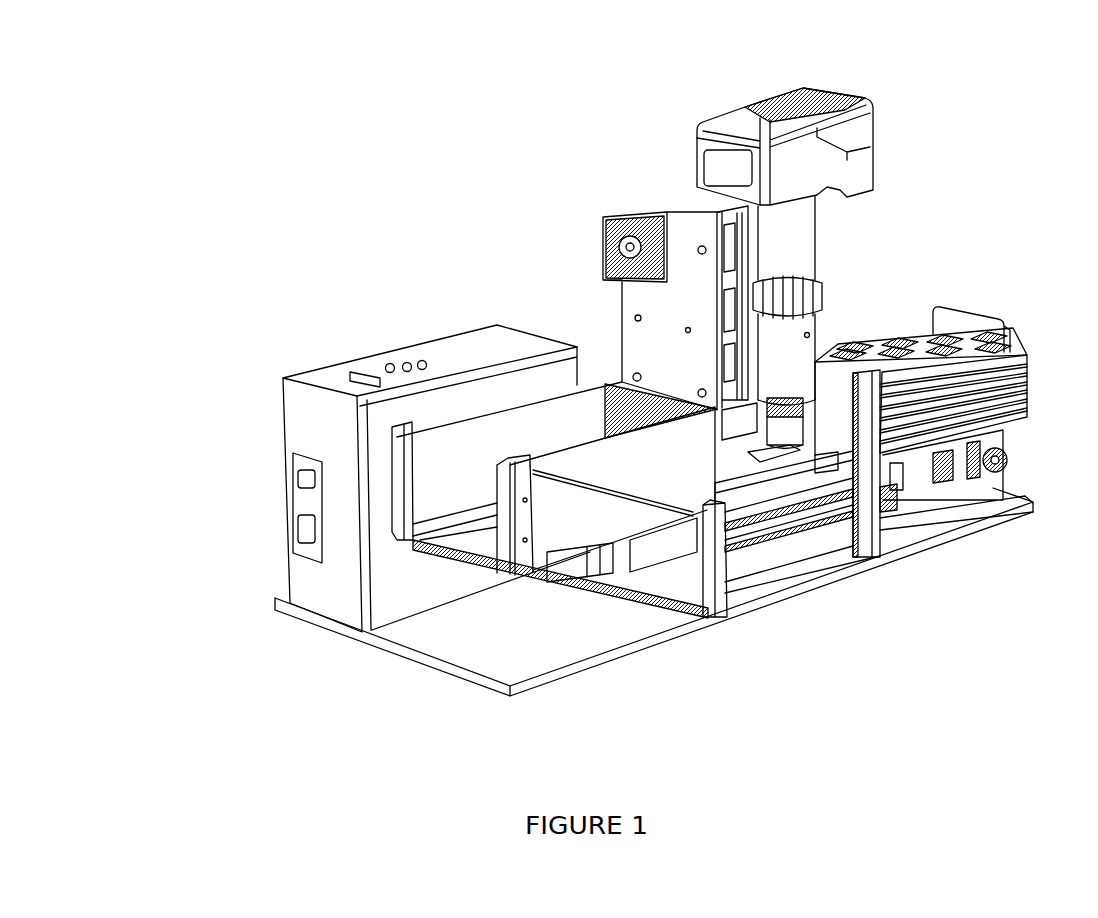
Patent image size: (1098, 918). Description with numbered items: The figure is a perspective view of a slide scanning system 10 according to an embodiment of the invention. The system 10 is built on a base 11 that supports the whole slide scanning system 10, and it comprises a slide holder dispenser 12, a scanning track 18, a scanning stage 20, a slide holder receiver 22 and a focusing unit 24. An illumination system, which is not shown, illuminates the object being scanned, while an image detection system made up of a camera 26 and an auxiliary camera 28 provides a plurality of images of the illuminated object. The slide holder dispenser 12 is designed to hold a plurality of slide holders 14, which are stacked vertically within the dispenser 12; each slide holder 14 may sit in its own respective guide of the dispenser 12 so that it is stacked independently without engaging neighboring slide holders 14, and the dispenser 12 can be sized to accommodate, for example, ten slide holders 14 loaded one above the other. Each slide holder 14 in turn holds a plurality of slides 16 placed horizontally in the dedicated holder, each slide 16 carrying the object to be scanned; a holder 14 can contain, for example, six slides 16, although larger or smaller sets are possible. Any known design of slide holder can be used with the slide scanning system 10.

The slide scanning system 10 is at (648, 394).
The base 11 is at (385, 648).
The slide holder dispenser 12 is at (973, 305).
The slide holder 14 is at (990, 392).
The slide 16 is at (898, 350).
The scanning track 18 is at (822, 505).
The scanning stage 20 is at (633, 424).
The slide holder receiver 22 is at (480, 530).
The focusing unit 24 is at (648, 300).
The camera 26 is at (853, 175).
The auxiliary camera 28 is at (745, 228).